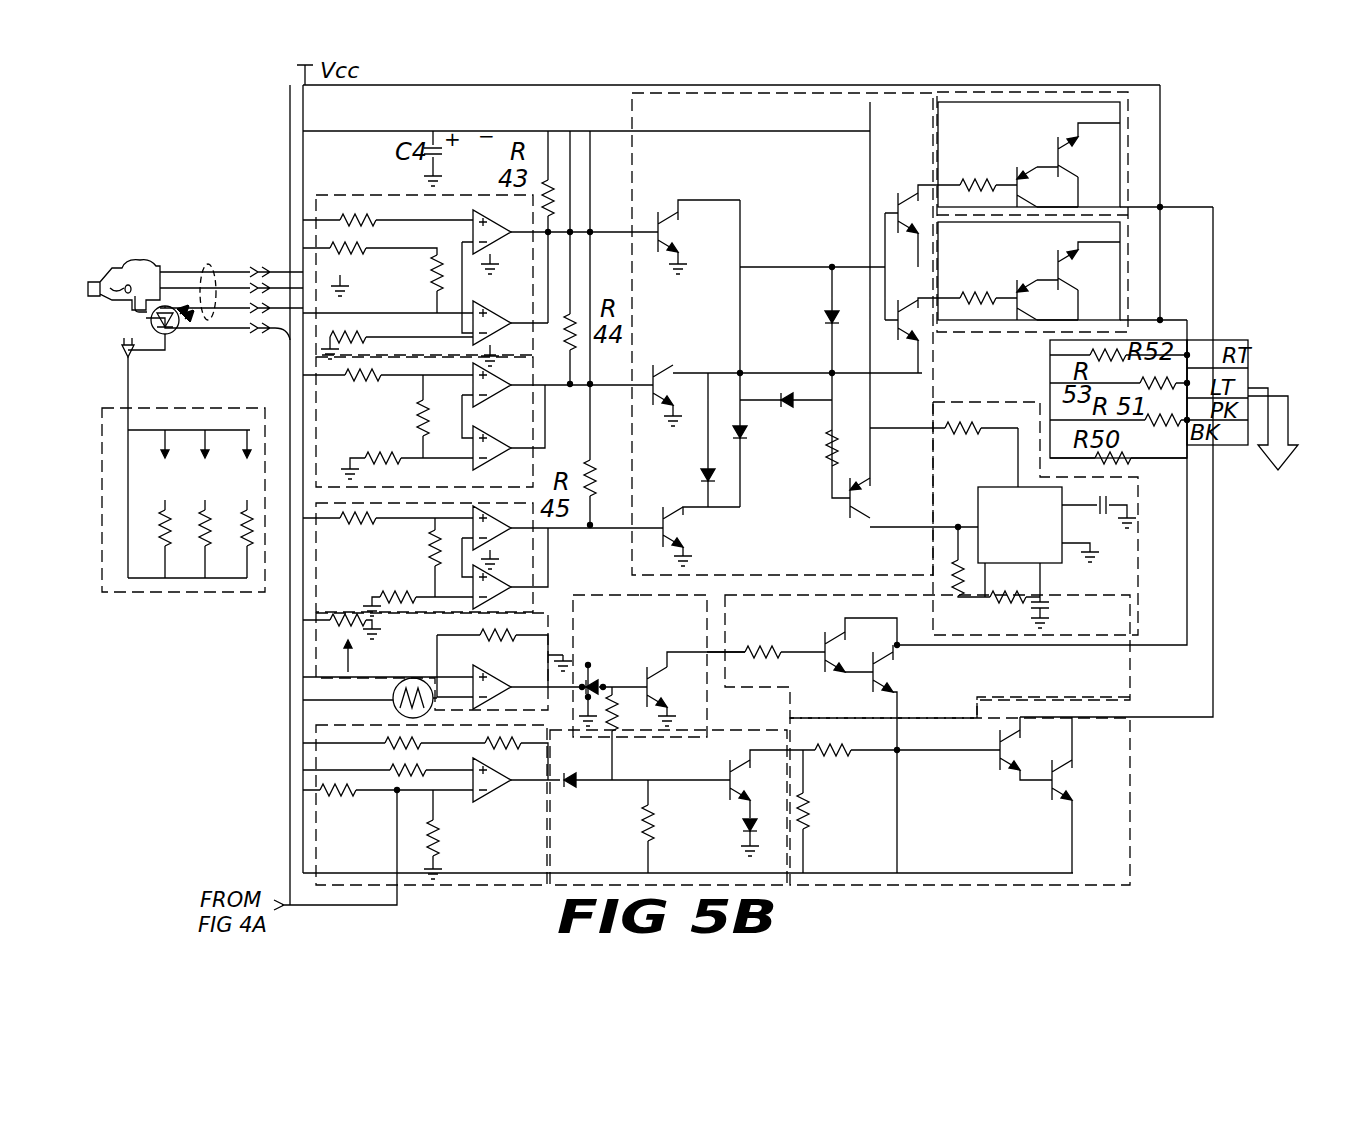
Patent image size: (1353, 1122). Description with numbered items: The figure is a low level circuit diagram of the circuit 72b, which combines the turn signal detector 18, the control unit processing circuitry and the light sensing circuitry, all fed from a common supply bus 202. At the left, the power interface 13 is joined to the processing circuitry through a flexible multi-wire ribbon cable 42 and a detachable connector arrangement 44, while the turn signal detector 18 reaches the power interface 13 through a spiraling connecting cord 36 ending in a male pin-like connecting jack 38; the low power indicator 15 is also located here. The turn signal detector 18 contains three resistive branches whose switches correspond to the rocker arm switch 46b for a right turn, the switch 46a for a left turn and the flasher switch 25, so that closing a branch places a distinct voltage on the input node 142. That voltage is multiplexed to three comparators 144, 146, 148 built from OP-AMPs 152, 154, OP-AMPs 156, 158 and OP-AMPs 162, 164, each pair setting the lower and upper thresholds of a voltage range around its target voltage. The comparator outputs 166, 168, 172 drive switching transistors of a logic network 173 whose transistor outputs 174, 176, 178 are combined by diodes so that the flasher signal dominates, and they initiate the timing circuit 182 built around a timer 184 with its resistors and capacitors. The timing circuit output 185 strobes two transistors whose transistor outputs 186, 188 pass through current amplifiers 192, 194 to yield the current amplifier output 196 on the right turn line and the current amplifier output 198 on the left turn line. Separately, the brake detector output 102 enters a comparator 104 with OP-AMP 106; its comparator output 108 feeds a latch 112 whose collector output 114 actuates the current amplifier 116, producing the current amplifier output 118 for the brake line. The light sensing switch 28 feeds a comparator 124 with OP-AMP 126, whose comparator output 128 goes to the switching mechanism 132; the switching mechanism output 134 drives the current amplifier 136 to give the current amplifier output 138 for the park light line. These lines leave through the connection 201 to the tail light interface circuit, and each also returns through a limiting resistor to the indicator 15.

The power interface 13 is at (139, 250).
The flexible multi-wire ribbon cable 42 is at (211, 250).
The detachable connector arrangement 44 is at (262, 250).
The input node 142 is at (224, 319).
The indicator 15 is at (180, 345).
The male pin-like connecting jack 38 is at (120, 348).
The connecting cord 36 is at (128, 378).
The turn signal detector 18 is at (153, 595).
The rocker arm switch 46b is at (157, 480).
The switch 46a is at (218, 472).
The flasher switch 25 is at (236, 472).
The control circuit supply bus 202 is at (486, 82).
The circuit 72b is at (1188, 96).
The comparator 144 is at (363, 301).
The comparator 146 is at (343, 444).
The comparator 148 is at (361, 571).
The OP-AMP 152 is at (478, 216).
The OP-AMP 154 is at (490, 312).
The OP-AMP 156 is at (493, 410).
The OP-AMP 158 is at (522, 452).
The OP-AMP 162 is at (508, 537).
The OP-AMP 164 is at (490, 568).
The comparator output 166 is at (584, 250).
The comparator output 168 is at (595, 429).
The comparator output 172 is at (573, 530).
The switching mechanism 132 is at (590, 580).
The comparator 124 is at (315, 682).
The light sensing switch 28 is at (412, 683).
The OP-AMP 126 is at (492, 669).
The brake detector output 102 is at (372, 885).
The OP-AMP 106 is at (518, 790).
The comparator output 108 is at (645, 801).
The comparator 104 is at (504, 885).
The comparator output 128 is at (575, 660).
The switching mechanism output 134 is at (685, 648).
The current amplifier 136 is at (1130, 668).
The current amplifier output 138 is at (1185, 633).
The current amplifier output 118 is at (1198, 717).
The latch 112 is at (800, 885).
The collector output 114 is at (761, 793).
The current amplifier 116 is at (975, 885).
The logic network 173 is at (635, 122).
The transistor output 174 is at (704, 200).
The transistor output 176 is at (704, 368).
The transistor output 178 is at (690, 510).
The current amplifier 192 is at (1128, 165).
The current amplifier 194 is at (1128, 252).
The transistor output 186 is at (940, 180).
The transistor output 188 is at (940, 297).
The current amplifier output 196 is at (1187, 207).
The current amplifier output 198 is at (1173, 318).
The output to tail light interface circuit 201 is at (1288, 428).
The timing circuit output 185 is at (1012, 405).
The timer circuit 184 is at (985, 487).
The timing circuit 182 is at (1085, 600).